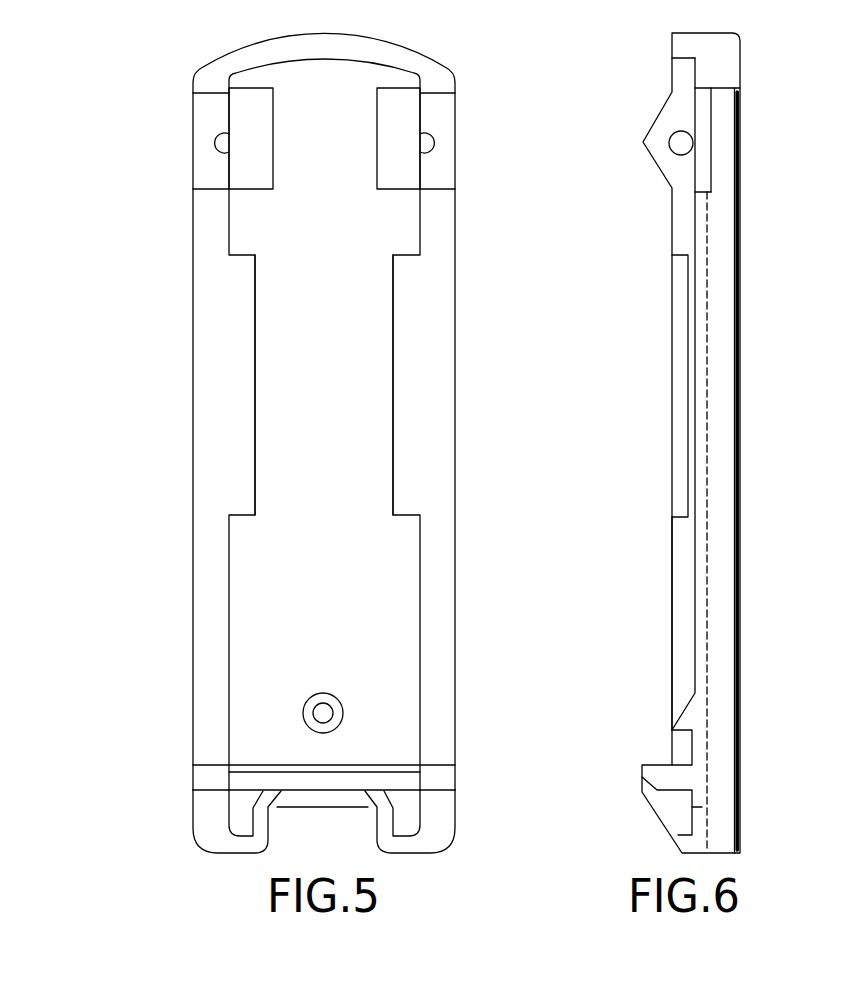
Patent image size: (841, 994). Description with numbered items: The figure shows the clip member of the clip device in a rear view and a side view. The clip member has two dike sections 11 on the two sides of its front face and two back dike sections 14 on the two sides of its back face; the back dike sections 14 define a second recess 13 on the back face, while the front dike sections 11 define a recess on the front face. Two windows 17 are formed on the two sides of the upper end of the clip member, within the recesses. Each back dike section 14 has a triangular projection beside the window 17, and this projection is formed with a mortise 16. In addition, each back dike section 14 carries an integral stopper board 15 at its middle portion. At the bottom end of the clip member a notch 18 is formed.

In FIG. 6, the dike section 11 is at (738, 310).
In FIG. 5, the second recess 13 is at (347, 568).
In FIG. 5, the back dike section 14 is at (208, 560).
In FIG. 6, the back dike section 14 is at (680, 602).
In FIG. 5, the stopper board 15 is at (238, 355).
In FIG. 6, the stopper board 15 is at (677, 367).
In FIG. 5, the mortise 16 is at (430, 146).
In FIG. 6, the mortise 16 is at (677, 149).
In FIG. 5, the window 17 is at (405, 106).
In FIG. 6, the window 17 is at (700, 132).
In FIG. 5, the notch 18 is at (290, 806).